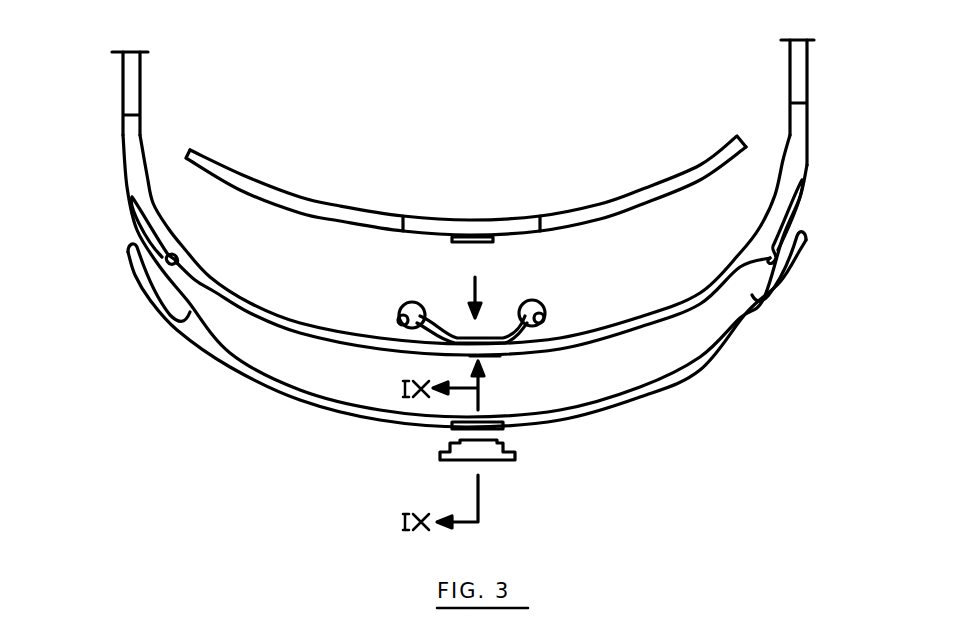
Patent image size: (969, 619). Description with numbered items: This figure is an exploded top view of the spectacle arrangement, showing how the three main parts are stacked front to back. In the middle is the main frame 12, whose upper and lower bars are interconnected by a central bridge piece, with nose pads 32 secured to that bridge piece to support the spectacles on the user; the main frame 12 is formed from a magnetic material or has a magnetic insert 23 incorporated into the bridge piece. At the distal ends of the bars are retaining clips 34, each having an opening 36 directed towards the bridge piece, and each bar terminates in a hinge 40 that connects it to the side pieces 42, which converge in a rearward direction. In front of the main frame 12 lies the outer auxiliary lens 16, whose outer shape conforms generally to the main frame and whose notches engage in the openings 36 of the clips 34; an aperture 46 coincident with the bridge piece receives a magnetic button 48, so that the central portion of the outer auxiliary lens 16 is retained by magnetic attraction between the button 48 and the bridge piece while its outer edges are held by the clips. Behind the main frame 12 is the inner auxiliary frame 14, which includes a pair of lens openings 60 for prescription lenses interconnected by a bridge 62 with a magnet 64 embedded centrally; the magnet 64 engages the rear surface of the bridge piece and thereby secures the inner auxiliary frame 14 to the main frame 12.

The main frame 12 is at (636, 306).
The inner auxiliary frame 14 is at (466, 207).
The outer auxiliary lens 16 is at (223, 363).
The magnetic insert 23 is at (485, 360).
The nose pads 32 is at (412, 300).
The retaining clips 34 is at (173, 290).
The opening 36 is at (177, 265).
The hinge 40 is at (123, 117).
The side pieces 42 is at (118, 72).
The aperture 46 is at (453, 428).
The magnetic button 48 is at (499, 462).
The lens openings 60 is at (245, 182).
The bridge 62 is at (455, 227).
The magnet 64 is at (483, 242).